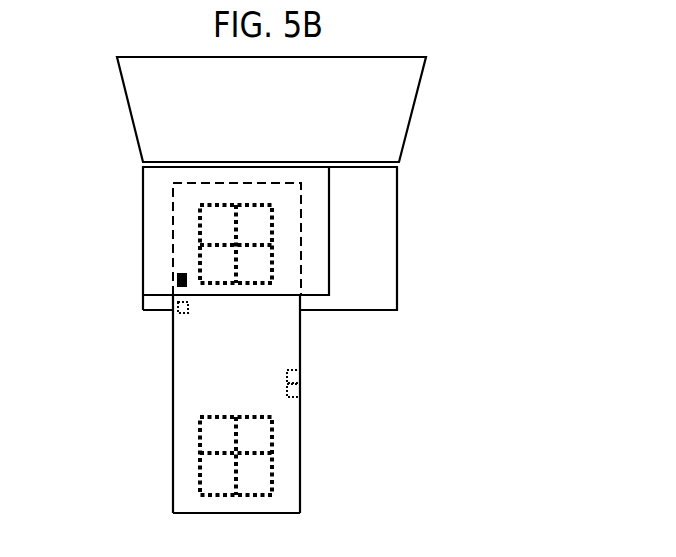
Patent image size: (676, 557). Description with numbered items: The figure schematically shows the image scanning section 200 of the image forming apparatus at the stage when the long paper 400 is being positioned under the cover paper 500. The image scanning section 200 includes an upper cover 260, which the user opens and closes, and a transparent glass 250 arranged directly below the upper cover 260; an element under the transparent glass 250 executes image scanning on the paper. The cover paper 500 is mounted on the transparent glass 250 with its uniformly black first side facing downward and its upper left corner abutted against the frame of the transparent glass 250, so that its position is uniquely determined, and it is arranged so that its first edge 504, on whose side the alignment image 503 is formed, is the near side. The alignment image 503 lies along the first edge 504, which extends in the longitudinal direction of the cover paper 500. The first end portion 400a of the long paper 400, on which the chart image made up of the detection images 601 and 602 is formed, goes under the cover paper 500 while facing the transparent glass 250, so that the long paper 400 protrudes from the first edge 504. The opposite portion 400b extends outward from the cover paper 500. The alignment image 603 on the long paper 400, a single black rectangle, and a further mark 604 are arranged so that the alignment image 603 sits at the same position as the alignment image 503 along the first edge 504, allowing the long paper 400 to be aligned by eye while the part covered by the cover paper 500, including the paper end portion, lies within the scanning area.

The image scanning section 200 is at (460, 138).
The transparent glass 250 is at (383, 238).
The upper cover 260 is at (405, 87).
The long paper 400 is at (187, 360).
The first end portion 400a is at (173, 184).
The second portion of flexible board 400b is at (182, 504).
The cover paper 500 is at (155, 198).
The alignment image 503 is at (178, 273).
The first edge 504 is at (255, 295).
The detection image 601 is at (243, 197).
The detection image 602 is at (250, 503).
The alignment image 603 is at (181, 320).
The second mark 604 is at (297, 403).